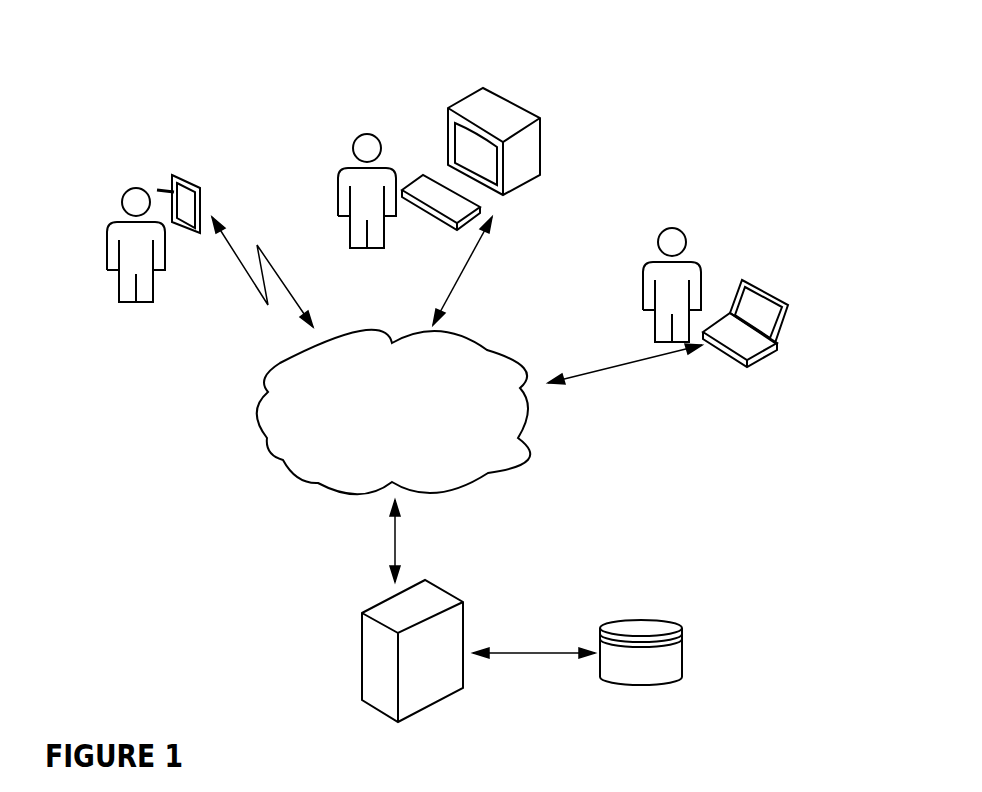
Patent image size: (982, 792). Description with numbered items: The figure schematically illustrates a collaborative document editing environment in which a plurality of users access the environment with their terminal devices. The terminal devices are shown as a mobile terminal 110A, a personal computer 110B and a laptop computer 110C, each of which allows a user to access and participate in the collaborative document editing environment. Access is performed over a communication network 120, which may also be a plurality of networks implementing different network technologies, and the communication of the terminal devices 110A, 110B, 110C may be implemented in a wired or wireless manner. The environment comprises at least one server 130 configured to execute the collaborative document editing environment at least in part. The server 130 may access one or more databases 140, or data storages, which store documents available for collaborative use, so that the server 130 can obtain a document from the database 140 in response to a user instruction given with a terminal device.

The mobile terminal 110A is at (203, 197).
The personal computer 110B is at (507, 103).
The laptop computer 110C is at (773, 293).
The communication network 120 is at (283, 460).
The server 130 is at (463, 602).
The database 140 is at (662, 622).